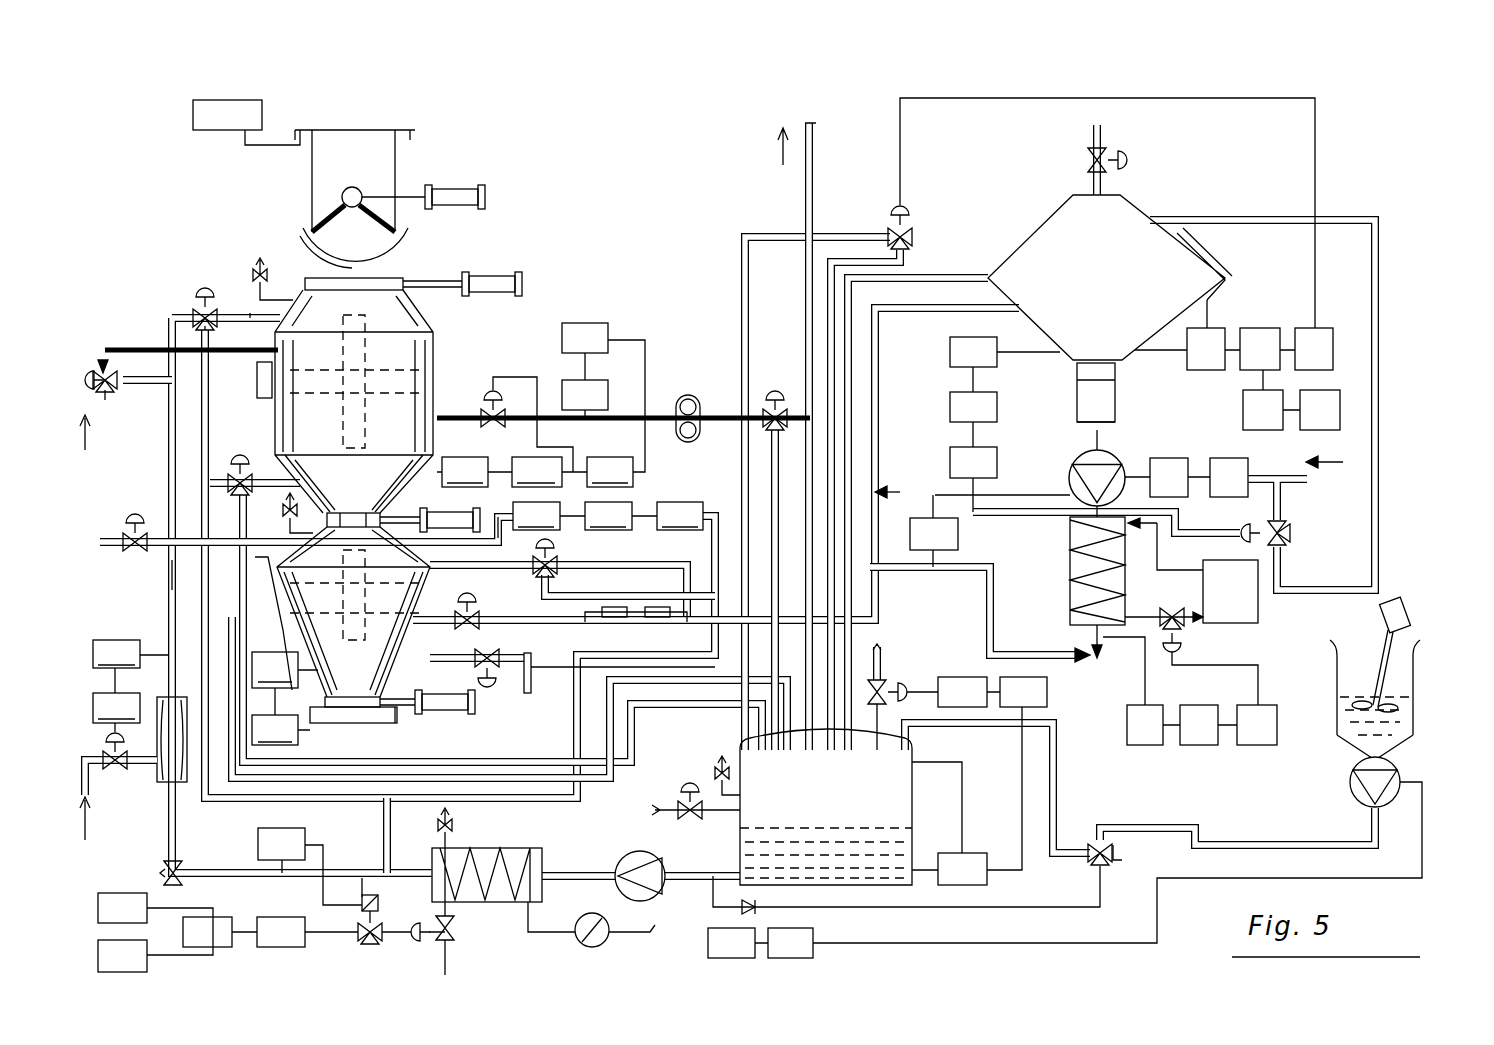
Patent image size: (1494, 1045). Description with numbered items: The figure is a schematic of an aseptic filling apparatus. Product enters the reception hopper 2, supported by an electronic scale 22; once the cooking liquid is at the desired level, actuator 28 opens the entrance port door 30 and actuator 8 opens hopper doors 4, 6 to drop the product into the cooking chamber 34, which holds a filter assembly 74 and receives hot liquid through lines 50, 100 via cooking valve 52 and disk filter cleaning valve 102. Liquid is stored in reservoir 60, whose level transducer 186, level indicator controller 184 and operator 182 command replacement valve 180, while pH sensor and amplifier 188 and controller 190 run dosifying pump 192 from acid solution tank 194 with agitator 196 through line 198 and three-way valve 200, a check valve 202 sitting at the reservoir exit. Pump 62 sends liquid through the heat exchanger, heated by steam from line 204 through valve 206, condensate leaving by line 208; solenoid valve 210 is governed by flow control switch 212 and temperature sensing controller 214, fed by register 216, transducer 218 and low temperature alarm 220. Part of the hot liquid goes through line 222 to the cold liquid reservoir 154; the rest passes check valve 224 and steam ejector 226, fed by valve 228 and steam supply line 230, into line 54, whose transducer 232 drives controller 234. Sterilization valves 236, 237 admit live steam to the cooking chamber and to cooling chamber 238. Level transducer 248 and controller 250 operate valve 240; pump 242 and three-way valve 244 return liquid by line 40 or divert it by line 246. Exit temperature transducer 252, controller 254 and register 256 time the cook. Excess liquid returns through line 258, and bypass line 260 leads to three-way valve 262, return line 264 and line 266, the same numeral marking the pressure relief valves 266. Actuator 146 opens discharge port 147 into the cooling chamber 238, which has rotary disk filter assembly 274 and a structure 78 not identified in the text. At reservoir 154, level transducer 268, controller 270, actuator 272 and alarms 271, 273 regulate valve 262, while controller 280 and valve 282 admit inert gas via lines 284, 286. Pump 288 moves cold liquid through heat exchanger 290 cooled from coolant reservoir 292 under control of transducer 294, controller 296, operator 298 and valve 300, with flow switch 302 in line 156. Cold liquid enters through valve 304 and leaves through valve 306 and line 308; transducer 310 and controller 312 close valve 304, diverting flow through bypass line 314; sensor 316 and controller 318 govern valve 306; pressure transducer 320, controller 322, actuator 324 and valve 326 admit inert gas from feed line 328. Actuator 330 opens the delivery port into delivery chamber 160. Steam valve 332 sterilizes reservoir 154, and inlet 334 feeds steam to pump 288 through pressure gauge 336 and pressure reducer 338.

The reception hopper 2 is at (332, 136).
The hopper door 4 is at (392, 277).
The hopper door 6 is at (318, 262).
The actuator 8 is at (452, 187).
The electronic scale 22 is at (193, 118).
The actuator 28 is at (480, 272).
The cooking chamber entrance port door 30 is at (455, 272).
The cooking chamber 34 is at (437, 340).
The line 40 is at (783, 475).
The line 50 is at (250, 460).
The cooking valve 52 is at (248, 465).
The line 54 is at (170, 417).
The reservoir 60 is at (915, 805).
The pump 62 is at (625, 858).
The filter assembly 74 is at (372, 340).
The frame 78 is at (233, 617).
The line 100 is at (248, 310).
The disk filter cleaning valve 102 is at (197, 308).
The actuator 146 is at (470, 516).
The discharge port 147 is at (340, 512).
The cold liquid reservoir 154 is at (1130, 212).
The line 156 is at (993, 645).
The delivery chamber 160 is at (380, 720).
The valve 180 is at (967, 675).
The operator 182 is at (882, 652).
The level indicator controller 184 is at (1050, 692).
The transducer 186 is at (975, 886).
The sensor and amplifier 188 is at (813, 938).
The amplifier and controller 190 is at (790, 958).
The dosifying pump 192 is at (1400, 780).
The acid solution tank 194 is at (1413, 708).
The agitator 196 is at (1397, 610).
The line 198 is at (1252, 845).
The three-way valve 200 is at (1097, 842).
The check valve 202 is at (748, 912).
The line 204 is at (455, 965).
The valve 206 is at (458, 930).
The line 208 is at (622, 935).
The solenoid valve 210 is at (378, 945).
The flow control switch 212 is at (305, 836).
The temperature sensing controller 214 is at (290, 947).
The temperature indicating control register 216 is at (220, 947).
The temperature transducer 218 is at (150, 893).
The low temperature alarm 220 is at (157, 937).
The line 222 is at (578, 803).
The check valve 224 is at (180, 872).
The steam ejector 226 is at (183, 790).
The valve 228 is at (118, 775).
The steam supply line 230 is at (100, 790).
The transducer 232 is at (116, 654).
The temperature indicating controller 234 is at (116, 708).
The sterilization valve 236 is at (103, 368).
The sterilization valve 237 is at (165, 522).
The cooling chamber 238 is at (308, 712).
The valve 240 is at (492, 388).
The pump 242 is at (697, 445).
The three-way valve 244 is at (768, 393).
The line 246 is at (815, 170).
The level transducer 248 is at (465, 472).
The level indicating controller 250 is at (537, 472).
The transducer 252 is at (608, 388).
The temperature indicating controller 254 is at (585, 323).
The temperature indicating register 256 is at (610, 472).
The return line 258 is at (177, 575).
The bypass line 260 is at (385, 805).
The three-way valve 262 is at (905, 210).
The return line 264 is at (827, 295).
The pressure relief valve 266 is at (253, 268).
The level transducer 268 is at (1212, 328).
The level indicating controller 270 is at (1258, 328).
The low level alarm 271 is at (1340, 408).
The actuator 272 is at (1333, 350).
The high level alarm 273 is at (1243, 405).
The self-cleaning rotary disk filter assembly 274 is at (370, 575).
The controller 280 is at (950, 470).
The valve 282 is at (1285, 545).
The line 284 is at (1290, 528).
The line 286 is at (1377, 462).
The pump 288 is at (1075, 463).
The heat removing heat exchanger 290 is at (1068, 600).
The coolant reservoir 292 is at (1260, 618).
The transducer 294 is at (1140, 745).
The temperature indicator controller 296 is at (1200, 745).
The operator 298 is at (1260, 745).
The valve 300 is at (1180, 625).
The flow switch 302 is at (958, 535).
The valve 304 is at (556, 572).
The valve 306 is at (462, 625).
The line 308 is at (911, 493).
The temperature transducer 310 is at (612, 620).
The temperature indicator controller 312 is at (652, 620).
The bypass line 314 is at (870, 385).
The sensor 316 is at (275, 670).
The level indicator controller 318 is at (275, 730).
The pressure transducer 320 is at (536, 516).
The pressure indicator controller 322 is at (608, 516).
The actuator 324 is at (680, 516).
The valve 326 is at (478, 660).
The feed line 328 is at (530, 680).
The actuator 330 is at (463, 708).
The valve 332 is at (1128, 165).
The inlet 334 is at (1297, 482).
The pressure gauge 336 is at (1235, 458).
The pressure reducer 338 is at (1152, 458).